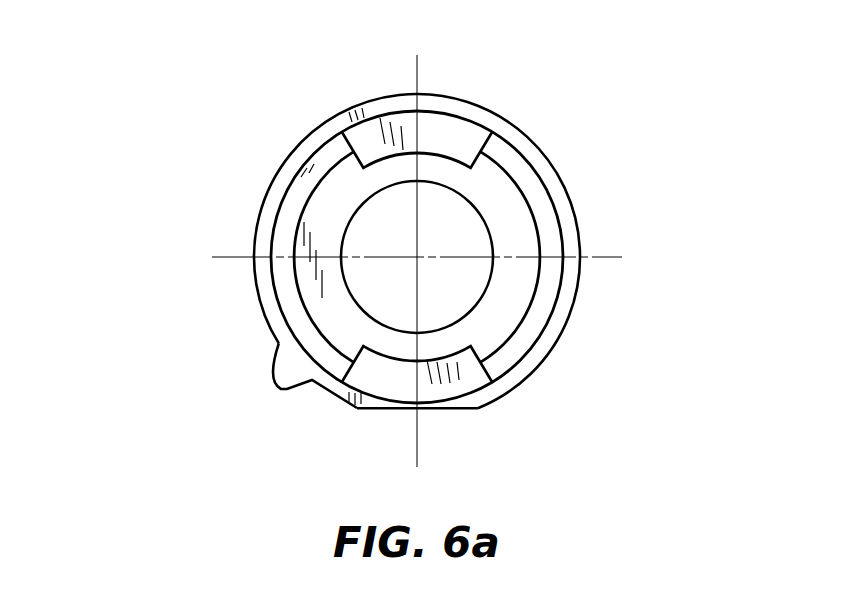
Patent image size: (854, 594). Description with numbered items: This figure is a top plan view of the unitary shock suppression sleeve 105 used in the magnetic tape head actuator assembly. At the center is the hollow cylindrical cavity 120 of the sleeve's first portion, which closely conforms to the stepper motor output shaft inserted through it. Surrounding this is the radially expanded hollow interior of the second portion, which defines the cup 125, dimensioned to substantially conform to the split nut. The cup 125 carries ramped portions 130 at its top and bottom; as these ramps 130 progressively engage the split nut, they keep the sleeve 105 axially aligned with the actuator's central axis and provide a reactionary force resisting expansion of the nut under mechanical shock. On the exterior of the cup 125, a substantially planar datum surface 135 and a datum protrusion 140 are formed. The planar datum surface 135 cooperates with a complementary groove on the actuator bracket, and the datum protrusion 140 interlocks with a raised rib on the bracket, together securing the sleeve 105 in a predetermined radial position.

The shock suppression sleeve 105 is at (158, 335).
The hollow cylindrical cavity 120 is at (445, 232).
The cup 125 is at (503, 228).
The ramped portions 130 is at (447, 138).
The planar datum surface 135 is at (382, 409).
The datum protrusion 140 is at (287, 393).